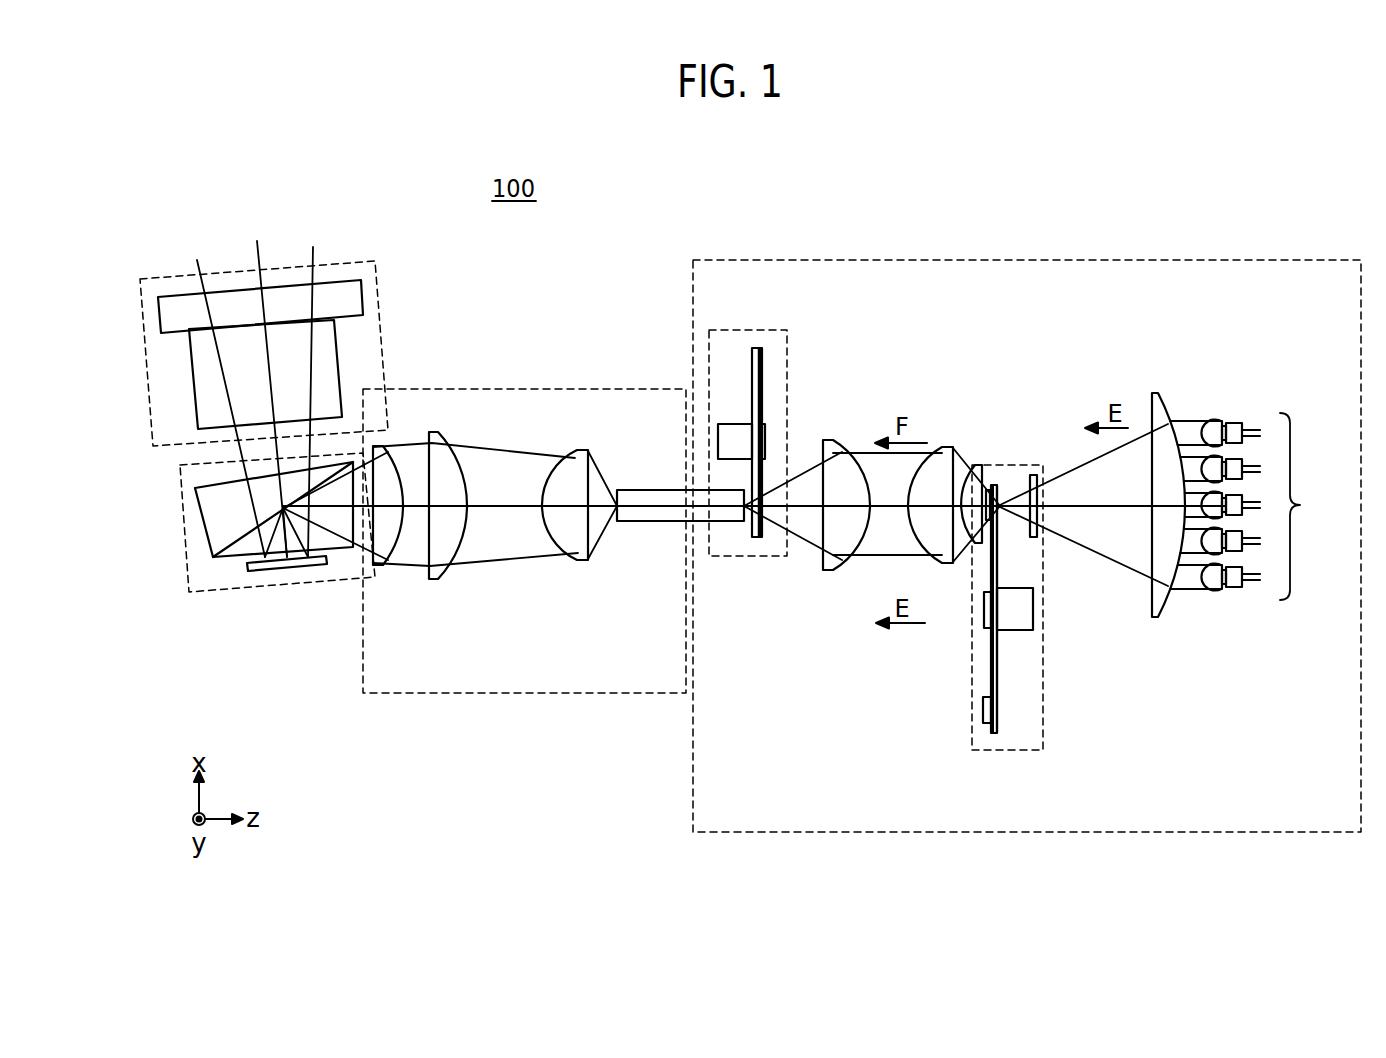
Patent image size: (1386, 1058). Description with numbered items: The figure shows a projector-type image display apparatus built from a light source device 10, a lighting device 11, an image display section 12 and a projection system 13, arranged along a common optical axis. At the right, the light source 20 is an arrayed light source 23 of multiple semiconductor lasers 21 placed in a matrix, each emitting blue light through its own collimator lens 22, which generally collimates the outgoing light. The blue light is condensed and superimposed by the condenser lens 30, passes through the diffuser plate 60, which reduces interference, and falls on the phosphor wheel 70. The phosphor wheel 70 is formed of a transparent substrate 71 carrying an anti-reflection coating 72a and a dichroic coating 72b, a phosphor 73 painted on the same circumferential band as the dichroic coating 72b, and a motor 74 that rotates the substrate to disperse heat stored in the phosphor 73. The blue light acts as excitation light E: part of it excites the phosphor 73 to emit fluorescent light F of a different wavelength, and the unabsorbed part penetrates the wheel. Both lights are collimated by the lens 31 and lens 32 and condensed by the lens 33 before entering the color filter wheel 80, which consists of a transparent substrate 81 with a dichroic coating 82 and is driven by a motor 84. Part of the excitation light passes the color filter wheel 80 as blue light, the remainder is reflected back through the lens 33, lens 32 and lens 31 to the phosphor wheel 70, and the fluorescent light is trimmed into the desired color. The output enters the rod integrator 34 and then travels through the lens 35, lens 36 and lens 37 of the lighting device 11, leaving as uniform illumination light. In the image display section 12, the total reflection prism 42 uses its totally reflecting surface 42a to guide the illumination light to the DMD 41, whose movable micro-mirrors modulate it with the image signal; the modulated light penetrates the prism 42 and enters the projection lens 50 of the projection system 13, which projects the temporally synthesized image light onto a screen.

The light source device 10 is at (942, 258).
The lighting device 11 is at (537, 387).
The image display section 12 is at (178, 497).
The projection system 13 is at (332, 262).
The light source 20 is at (1249, 444).
The semiconductor laser 21 is at (1212, 351).
The collimator lens 22 is at (1215, 422).
The arrayed light source 23 is at (1310, 506).
The condenser lens 30 is at (1165, 612).
The lens 31 is at (983, 468).
The lens 32 is at (953, 448).
The lens 33 is at (823, 440).
The rod integrator 34 is at (680, 522).
The lens 35 is at (580, 558).
The lens 36 is at (432, 579).
The lens 37 is at (377, 565).
The DMD 41 is at (287, 569).
The total reflection prism 42 is at (202, 528).
The surface 42a is at (230, 545).
The projection lens 50 is at (337, 350).
The diffuser plate 60 is at (1037, 535).
The phosphor wheel 70 is at (1022, 752).
The transparent substrate 71 is at (995, 660).
The anti-reflection coating 72a is at (995, 697).
The dichroic coating 72b is at (990, 733).
The phosphor 73 is at (986, 705).
The motor 74 is at (1033, 612).
The color filter wheel 80 is at (748, 557).
The transparent substrate 81 is at (760, 347).
The dichroic coating 82 is at (762, 363).
The motor 84 is at (718, 424).